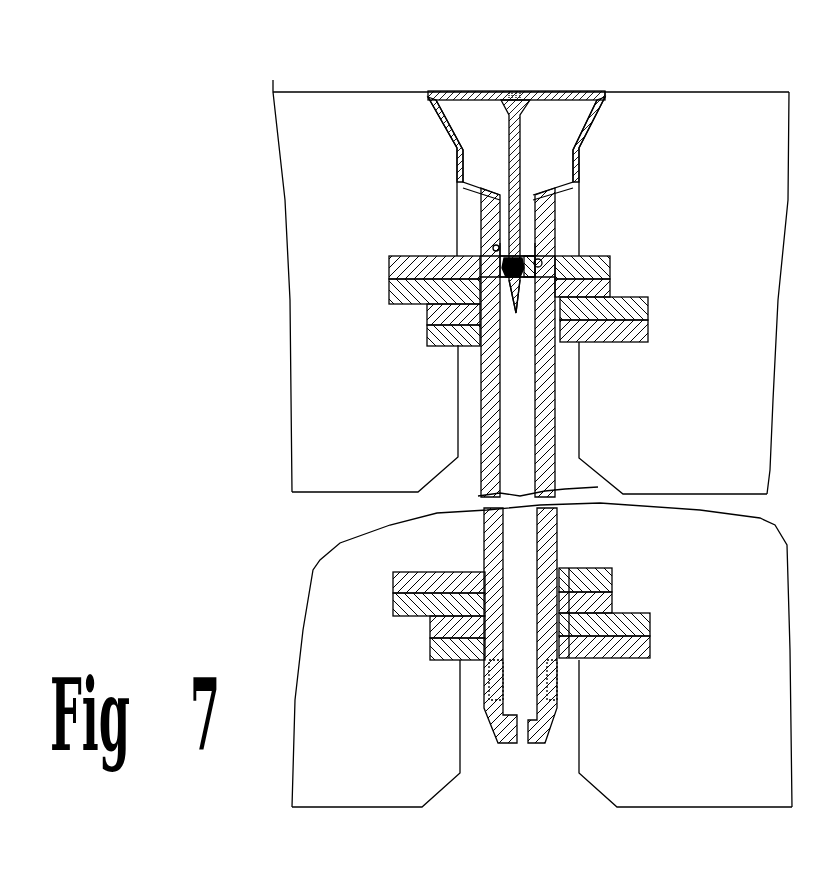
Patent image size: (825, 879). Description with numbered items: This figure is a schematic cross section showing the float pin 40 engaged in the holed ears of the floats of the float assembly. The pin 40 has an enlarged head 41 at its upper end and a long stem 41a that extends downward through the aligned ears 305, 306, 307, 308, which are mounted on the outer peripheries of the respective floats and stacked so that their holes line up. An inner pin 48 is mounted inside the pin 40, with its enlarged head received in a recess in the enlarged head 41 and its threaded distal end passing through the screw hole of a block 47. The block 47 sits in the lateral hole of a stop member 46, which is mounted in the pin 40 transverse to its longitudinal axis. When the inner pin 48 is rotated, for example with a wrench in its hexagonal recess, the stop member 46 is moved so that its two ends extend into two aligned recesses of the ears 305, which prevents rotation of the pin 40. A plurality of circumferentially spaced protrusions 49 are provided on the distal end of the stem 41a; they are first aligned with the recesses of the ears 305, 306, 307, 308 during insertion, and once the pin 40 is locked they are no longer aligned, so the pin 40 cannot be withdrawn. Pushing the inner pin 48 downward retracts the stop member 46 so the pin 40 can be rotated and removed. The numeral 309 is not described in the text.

The float pin 40 is at (563, 437).
The enlarged head 41 is at (567, 90).
The stem 41a is at (557, 545).
The stop member 46 is at (500, 258).
The block 47 is at (515, 318).
The inner pin 48 is at (520, 165).
The protrusions 49 is at (555, 690).
The ear 305 is at (389, 262).
The ear 306 is at (389, 294).
The ear 307 is at (644, 310).
The ear 308 is at (648, 332).
The lower clamp 309 is at (450, 650).